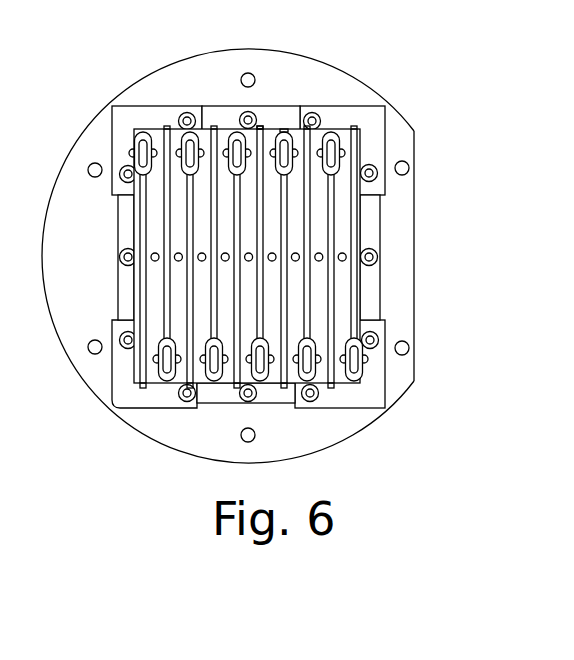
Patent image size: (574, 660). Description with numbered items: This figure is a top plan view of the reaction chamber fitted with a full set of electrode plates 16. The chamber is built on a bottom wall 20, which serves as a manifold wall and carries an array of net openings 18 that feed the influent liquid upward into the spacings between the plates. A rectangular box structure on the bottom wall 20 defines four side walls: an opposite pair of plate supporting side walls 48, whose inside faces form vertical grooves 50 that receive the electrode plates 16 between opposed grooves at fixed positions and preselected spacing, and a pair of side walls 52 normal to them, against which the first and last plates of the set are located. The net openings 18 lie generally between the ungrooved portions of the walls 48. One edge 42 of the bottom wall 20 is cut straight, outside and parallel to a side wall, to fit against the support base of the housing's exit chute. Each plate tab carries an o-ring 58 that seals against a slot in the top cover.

The bottom wall 20 is at (400, 145).
The straight edge 42 is at (415, 330).
The plate supporting side wall 48 is at (222, 112).
The vertical groove 50 is at (283, 130).
The side wall 52 is at (370, 237).
The o-ring 58 is at (213, 382).
The electrode plate 16 is at (192, 288).
The net opening 18 is at (202, 252).